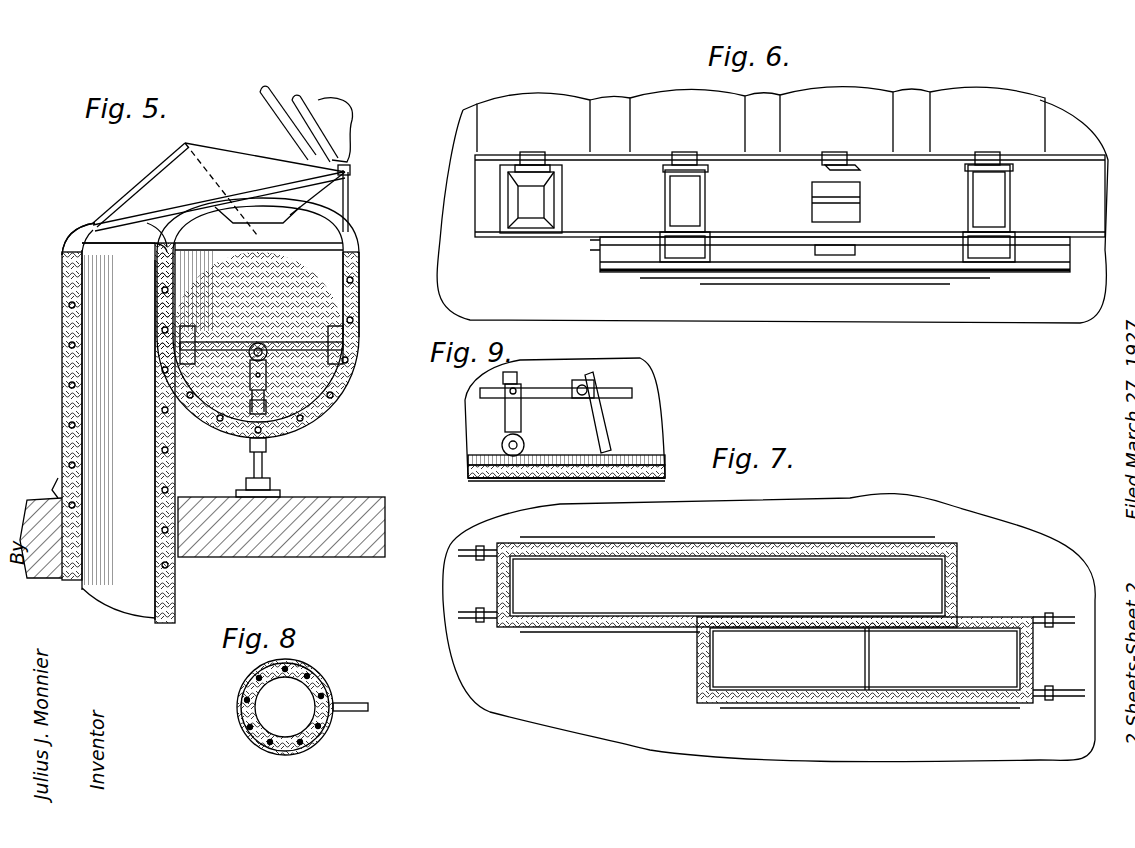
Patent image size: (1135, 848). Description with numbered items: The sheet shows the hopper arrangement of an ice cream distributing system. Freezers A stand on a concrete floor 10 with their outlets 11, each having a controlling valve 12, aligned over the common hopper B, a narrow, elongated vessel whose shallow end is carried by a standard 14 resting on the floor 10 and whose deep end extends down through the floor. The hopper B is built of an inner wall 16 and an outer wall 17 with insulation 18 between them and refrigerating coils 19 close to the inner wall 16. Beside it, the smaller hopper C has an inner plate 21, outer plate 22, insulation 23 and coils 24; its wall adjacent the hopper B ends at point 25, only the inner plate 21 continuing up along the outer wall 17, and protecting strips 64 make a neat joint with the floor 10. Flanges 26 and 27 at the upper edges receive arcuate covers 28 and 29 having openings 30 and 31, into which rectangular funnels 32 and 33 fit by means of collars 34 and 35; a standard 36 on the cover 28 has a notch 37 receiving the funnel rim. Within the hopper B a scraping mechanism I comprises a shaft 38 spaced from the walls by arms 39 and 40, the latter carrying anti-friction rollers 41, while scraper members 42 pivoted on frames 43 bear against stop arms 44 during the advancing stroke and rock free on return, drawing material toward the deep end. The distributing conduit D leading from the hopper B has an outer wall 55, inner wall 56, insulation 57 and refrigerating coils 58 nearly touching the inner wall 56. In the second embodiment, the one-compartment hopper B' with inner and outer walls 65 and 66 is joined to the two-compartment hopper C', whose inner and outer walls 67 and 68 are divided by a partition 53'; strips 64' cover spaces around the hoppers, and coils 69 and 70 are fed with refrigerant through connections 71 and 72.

In FIG. 5, the supporting floor 10 is at (360, 497).
In FIG. 6, the supporting floor 10 is at (455, 276).
In FIG. 7, the supporting floor 10 is at (460, 690).
In FIG. 5, the outlet 11 is at (297, 100).
In FIG. 6, the outlet 11 is at (545, 155).
In FIG. 5, the controlling valve 12 is at (260, 92).
In FIG. 6, the controlling valve 12 is at (552, 170).
In FIG. 5, the standard 14 is at (263, 464).
In FIG. 5, the inner wall 16 is at (343, 300).
In FIG. 9, the inner wall 16 is at (468, 458).
In FIG. 5, the outer wall 17 is at (360, 292).
In FIG. 9, the outer wall 17 is at (480, 474).
In FIG. 5, the insulation 18 is at (352, 328).
In FIG. 9, the insulation 18 is at (475, 468).
In FIG. 5, the refrigerating coils 19 is at (355, 372).
In FIG. 5, the inner plate 21 is at (157, 333).
In FIG. 6, the inner plate 21 is at (598, 262).
In FIG. 5, the outer plate 22 is at (68, 370).
In FIG. 5, the insulation 23 is at (68, 385).
In FIG. 5, the refrigerating coils 24 is at (68, 346).
In FIG. 5, the termination point 25 is at (157, 370).
In FIG. 5, the flange 26 is at (338, 250).
In FIG. 5, the flange 27 is at (152, 232).
In FIG. 6, the flange 27 is at (893, 240).
In FIG. 5, the cover 28 is at (198, 236).
In FIG. 6, the cover 28 is at (605, 225).
In FIG. 5, the cover 29 is at (78, 228).
In FIG. 6, the cover 29 is at (616, 260).
In FIG. 5, the opening 30 is at (293, 225).
In FIG. 6, the opening 30 is at (548, 192).
In FIG. 5, the opening 31 is at (148, 246).
In FIG. 6, the opening 31 is at (826, 256).
In FIG. 5, the funnel 32 is at (240, 165).
In FIG. 6, the funnel 32 is at (548, 222).
In FIG. 5, the funnel 33 is at (148, 180).
In FIG. 6, the funnel 33 is at (706, 216).
In FIG. 5, the collar 34 is at (330, 206).
In FIG. 5, the collar 35 is at (105, 227).
In FIG. 6, the collar 35 is at (695, 262).
In FIG. 5, the standard 36 is at (350, 190).
In FIG. 5, the notch 37 is at (352, 172).
In FIG. 5, the shaft 38 is at (262, 346).
In FIG. 6, the shaft 38 is at (820, 204).
In FIG. 9, the shaft 38 is at (482, 393).
In FIG. 5, the arms 39 is at (236, 352).
In FIG. 9, the arms 39 is at (518, 373).
In FIG. 5, the arms 40 is at (266, 378).
In FIG. 9, the arms 40 is at (507, 412).
In FIG. 5, the anti-friction rollers 41 is at (293, 436).
In FIG. 9, the anti-friction rollers 41 is at (496, 480).
In FIG. 5, the scraper members 42 is at (290, 405).
In FIG. 9, the scraper members 42 is at (605, 432).
In FIG. 9, the frame 43 is at (578, 382).
In FIG. 9, the stop arm 44 is at (590, 409).
In FIG. 7, the partition 53' is at (889, 659).
In FIG. 8, the outer wall 55 is at (245, 710).
In FIG. 8, the inner wall 56 is at (315, 684).
In FIG. 8, the insulation 57 is at (304, 676).
In FIG. 8, the refrigerating coils 58 is at (362, 700).
In FIG. 5, the protecting and finishing strips 64 is at (37, 486).
In FIG. 6, the protecting and finishing strips 64 is at (857, 216).
In FIG. 7, the strips 64' is at (625, 611).
In FIG. 7, the inner wall 65 is at (612, 565).
In FIG. 7, the outer wall 66 is at (648, 553).
In FIG. 7, the inner wall 67 is at (840, 630).
In FIG. 7, the outer wall 68 is at (858, 712).
In FIG. 7, the refrigerating coils 69 is at (740, 553).
In FIG. 7, the refrigerating coils 70 is at (760, 700).
In FIG. 7, the connections 71 is at (475, 606).
In FIG. 7, the connections 72 is at (1048, 630).
In FIG. 5, the freezers A is at (318, 112).
In FIG. 6, the freezers A is at (583, 103).
In FIG. 5, the common hopper B is at (277, 345).
In FIG. 6, the common hopper B is at (775, 203).
In FIG. 9, the common hopper B is at (576, 418).
In FIG. 7, the hopper B' is at (727, 556).
In FIG. 5, the smaller hopper C is at (60, 401).
In FIG. 6, the smaller hopper C is at (830, 296).
In FIG. 7, the hopper C' is at (865, 700).
In FIG. 8, the distributing conduit D is at (322, 745).
In FIG. 5, the scraping mechanism I is at (235, 334).
In FIG. 6, the scraping mechanism I is at (818, 196).
In FIG. 9, the scraping mechanism I is at (629, 393).